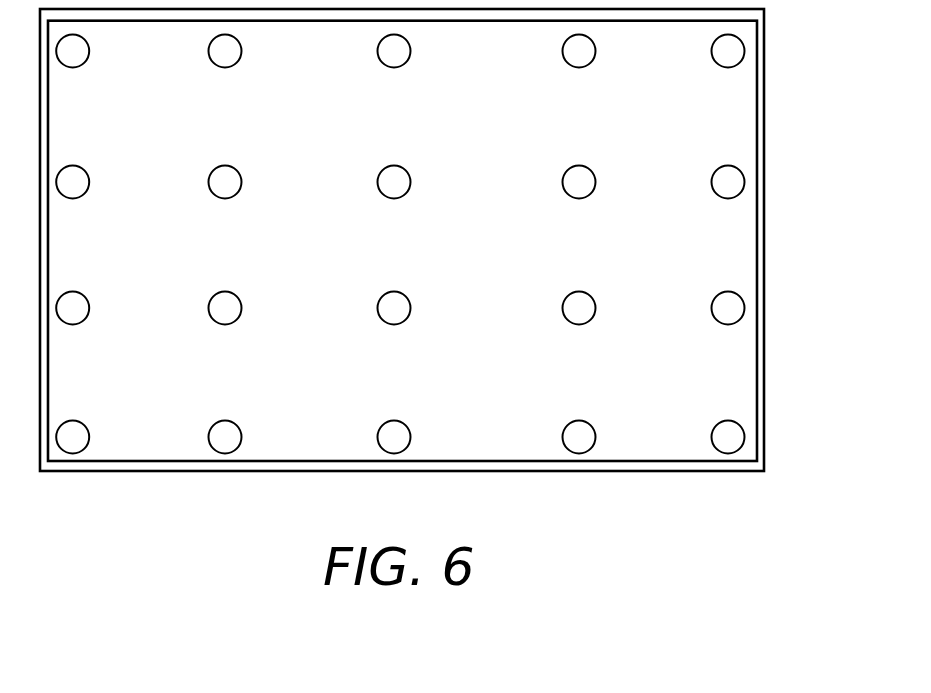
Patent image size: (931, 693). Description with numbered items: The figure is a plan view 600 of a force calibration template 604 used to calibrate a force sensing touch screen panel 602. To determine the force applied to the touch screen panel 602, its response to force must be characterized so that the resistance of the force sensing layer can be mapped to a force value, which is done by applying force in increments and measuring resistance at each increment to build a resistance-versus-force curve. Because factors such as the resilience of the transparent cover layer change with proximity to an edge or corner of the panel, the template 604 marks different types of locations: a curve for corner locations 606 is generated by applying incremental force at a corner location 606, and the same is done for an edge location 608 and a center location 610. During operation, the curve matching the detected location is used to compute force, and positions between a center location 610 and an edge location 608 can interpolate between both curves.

The plan view 600 is at (438, 261).
The force sensing touch screen panel 602 is at (765, 52).
The force calibration template 604 is at (757, 102).
The corner location 606 is at (711, 51).
The edge location 608 is at (728, 165).
The center location 610 is at (596, 182).